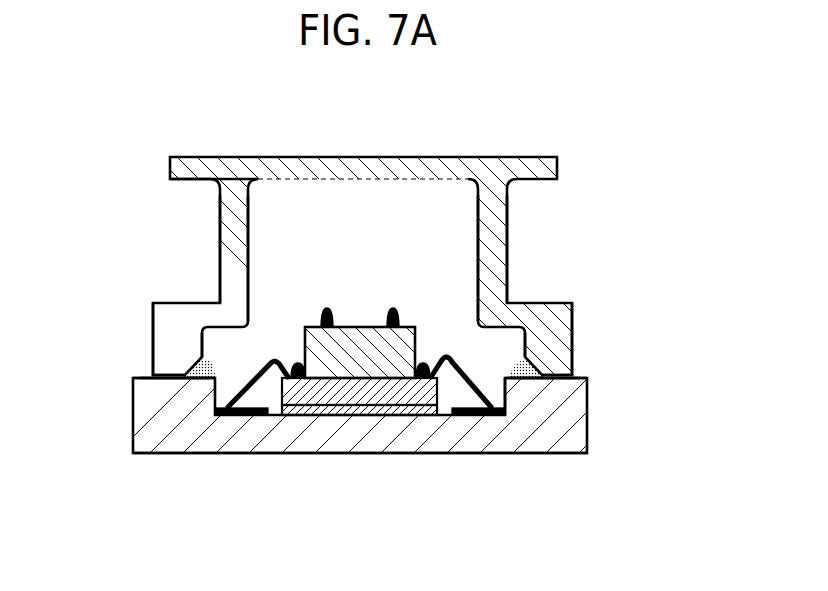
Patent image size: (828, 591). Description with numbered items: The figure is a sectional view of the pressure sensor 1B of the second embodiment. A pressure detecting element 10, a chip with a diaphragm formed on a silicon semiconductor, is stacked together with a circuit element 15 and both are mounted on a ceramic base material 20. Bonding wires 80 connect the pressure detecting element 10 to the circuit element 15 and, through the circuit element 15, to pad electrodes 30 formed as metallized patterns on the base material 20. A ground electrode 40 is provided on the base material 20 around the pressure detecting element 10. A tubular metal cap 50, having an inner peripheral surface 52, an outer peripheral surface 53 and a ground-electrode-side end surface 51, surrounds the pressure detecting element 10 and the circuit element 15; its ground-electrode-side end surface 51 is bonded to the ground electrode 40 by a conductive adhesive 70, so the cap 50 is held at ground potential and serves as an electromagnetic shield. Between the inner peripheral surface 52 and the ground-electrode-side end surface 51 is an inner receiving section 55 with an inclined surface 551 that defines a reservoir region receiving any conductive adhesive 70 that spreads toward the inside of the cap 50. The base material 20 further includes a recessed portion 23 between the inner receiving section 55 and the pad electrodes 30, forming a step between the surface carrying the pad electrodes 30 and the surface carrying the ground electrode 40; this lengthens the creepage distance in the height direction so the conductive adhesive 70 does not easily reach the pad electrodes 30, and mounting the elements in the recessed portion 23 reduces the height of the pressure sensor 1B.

The pressure sensor 1B is at (548, 128).
The pressure detecting element 10 is at (360, 327).
The circuit element 15 is at (348, 414).
The base material 20 is at (587, 417).
The recessed portion 23 is at (510, 384).
The pad electrodes 30 is at (247, 414).
The ground electrode 40 is at (168, 384).
The cap 50 is at (557, 170).
The ground-electrode-side end surface 51 is at (158, 382).
The inner peripheral surface 52 is at (250, 250).
The outer peripheral surface 53 is at (153, 340).
The inner receiving section 55 is at (198, 374).
The conductive adhesive 70 is at (207, 371).
The bonding wires 80 is at (297, 362).
The inclined surface 551 is at (202, 325).